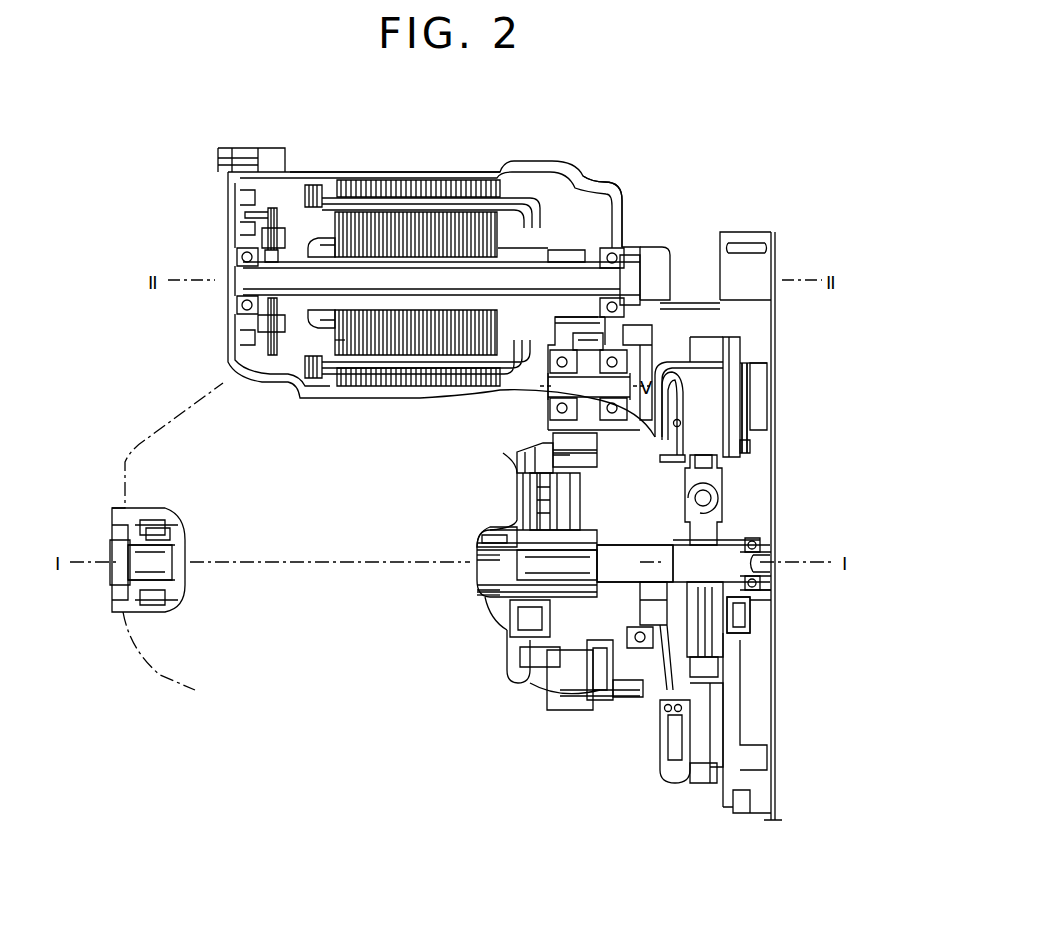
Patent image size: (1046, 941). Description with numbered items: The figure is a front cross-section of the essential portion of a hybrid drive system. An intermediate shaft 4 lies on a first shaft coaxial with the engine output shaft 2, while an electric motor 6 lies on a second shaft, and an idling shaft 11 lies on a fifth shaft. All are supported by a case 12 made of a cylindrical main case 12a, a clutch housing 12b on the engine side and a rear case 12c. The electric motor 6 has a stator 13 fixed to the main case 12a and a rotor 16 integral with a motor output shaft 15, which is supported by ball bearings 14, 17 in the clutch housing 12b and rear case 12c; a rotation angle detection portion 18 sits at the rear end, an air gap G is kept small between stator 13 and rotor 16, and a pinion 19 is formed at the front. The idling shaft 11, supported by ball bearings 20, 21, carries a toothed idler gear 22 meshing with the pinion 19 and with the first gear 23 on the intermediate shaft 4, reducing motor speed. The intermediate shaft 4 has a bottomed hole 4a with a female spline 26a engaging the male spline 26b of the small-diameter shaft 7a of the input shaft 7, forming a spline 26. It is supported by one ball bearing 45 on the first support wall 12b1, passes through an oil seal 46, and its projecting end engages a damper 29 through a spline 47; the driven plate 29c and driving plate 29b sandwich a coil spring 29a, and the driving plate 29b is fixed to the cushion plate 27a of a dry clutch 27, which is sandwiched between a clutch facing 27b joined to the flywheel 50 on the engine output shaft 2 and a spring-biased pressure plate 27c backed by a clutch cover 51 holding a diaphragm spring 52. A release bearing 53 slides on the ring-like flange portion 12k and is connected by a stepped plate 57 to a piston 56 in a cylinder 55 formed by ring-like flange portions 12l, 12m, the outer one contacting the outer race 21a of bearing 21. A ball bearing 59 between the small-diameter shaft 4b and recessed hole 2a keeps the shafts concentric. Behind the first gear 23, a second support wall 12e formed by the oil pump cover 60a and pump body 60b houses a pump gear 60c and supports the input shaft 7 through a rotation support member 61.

The engine output shaft 2 is at (756, 598).
The recessed hole 2a is at (760, 580).
The intermediate shaft 4 is at (735, 545).
The bottomed hole 4a is at (565, 564).
The small-diameter shaft 4b is at (768, 548).
The electric motor 6 is at (385, 170).
The input shaft 7 is at (183, 545).
The small-diameter shaft 7a is at (620, 558).
The idling shaft 11 is at (600, 378).
The case 12 is at (521, 158).
The main case 12a is at (494, 165).
The clutch housing 12b is at (612, 181).
The first support wall 12b1 is at (560, 660).
The rear case 12c is at (230, 182).
The second support wall 12e is at (513, 517).
The ring-like flange portion 12k is at (720, 640).
The ring-like flange portion 12l is at (503, 470).
The ring-like flange portion 12m is at (516, 448).
The stator 13 is at (452, 185).
The ball bearing 14 is at (614, 256).
The motor output shaft 15 is at (527, 268).
The rotor 16 is at (378, 215).
The ball bearing 17 is at (243, 256).
The rotation angle detection portion 18 is at (287, 228).
The toothed gear (pinion) 19 is at (580, 260).
The ball bearing 20 is at (560, 408).
The ball bearing 21 is at (610, 340).
The outer race 21a is at (548, 395).
The toothed idler gear 22 is at (583, 333).
The toothed gear (first gear) 23 is at (530, 454).
The spline 26 is at (345, 630).
The female spline 26a is at (500, 553).
The male spline 26b is at (487, 547).
The dry clutch 27 is at (742, 410).
The cushion plate 27a is at (733, 448).
The clutch facing 27b is at (720, 392).
The pressure plate 27c is at (697, 395).
The damper 29 is at (722, 500).
The coil spring 29a is at (728, 488).
The driving plate 29b is at (720, 612).
The driven plate 29c is at (710, 600).
The ball bearing 45 is at (585, 600).
The oil seal 46 is at (525, 652).
The spline 47 is at (745, 604).
The flywheel 50 is at (747, 347).
The clutch cover 51 is at (705, 362).
The diaphragm spring 52 is at (668, 700).
The release bearing 53 is at (640, 697).
The cylinder 55 is at (593, 660).
The piston 56 is at (635, 648).
The stepped plate 57 is at (635, 405).
The ball bearing 59 is at (753, 545).
The oil pump cover 60a is at (510, 672).
The pump body 60b is at (545, 690).
The pump gear 60c is at (587, 552).
The rotation support member 61 is at (495, 527).
The air gap G is at (345, 344).